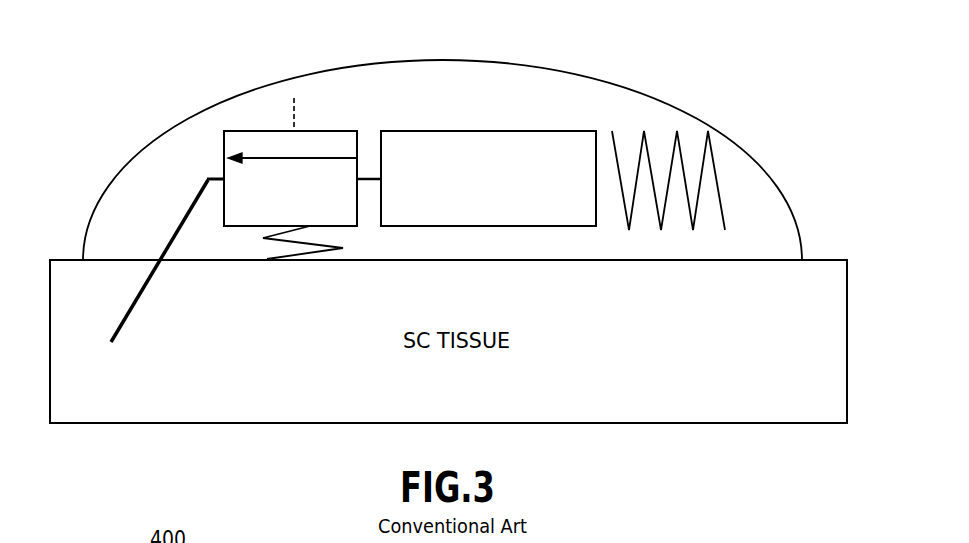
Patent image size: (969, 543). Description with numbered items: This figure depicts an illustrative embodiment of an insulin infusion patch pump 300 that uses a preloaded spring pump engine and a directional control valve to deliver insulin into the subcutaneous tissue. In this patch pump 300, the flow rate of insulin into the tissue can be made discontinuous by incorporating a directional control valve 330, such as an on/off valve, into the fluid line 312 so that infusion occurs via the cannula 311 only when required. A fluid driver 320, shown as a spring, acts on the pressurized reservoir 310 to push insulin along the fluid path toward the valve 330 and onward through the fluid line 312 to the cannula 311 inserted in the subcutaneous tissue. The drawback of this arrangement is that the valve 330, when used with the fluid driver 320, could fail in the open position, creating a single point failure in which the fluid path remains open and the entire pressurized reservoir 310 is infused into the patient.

The patch pump 300 is at (209, 61).
The reservoir 310 is at (505, 131).
The cannula 311 is at (133, 312).
The fluid line 312 is at (217, 178).
The fluid driver 320 is at (683, 132).
The directional control valve 330 is at (343, 131).